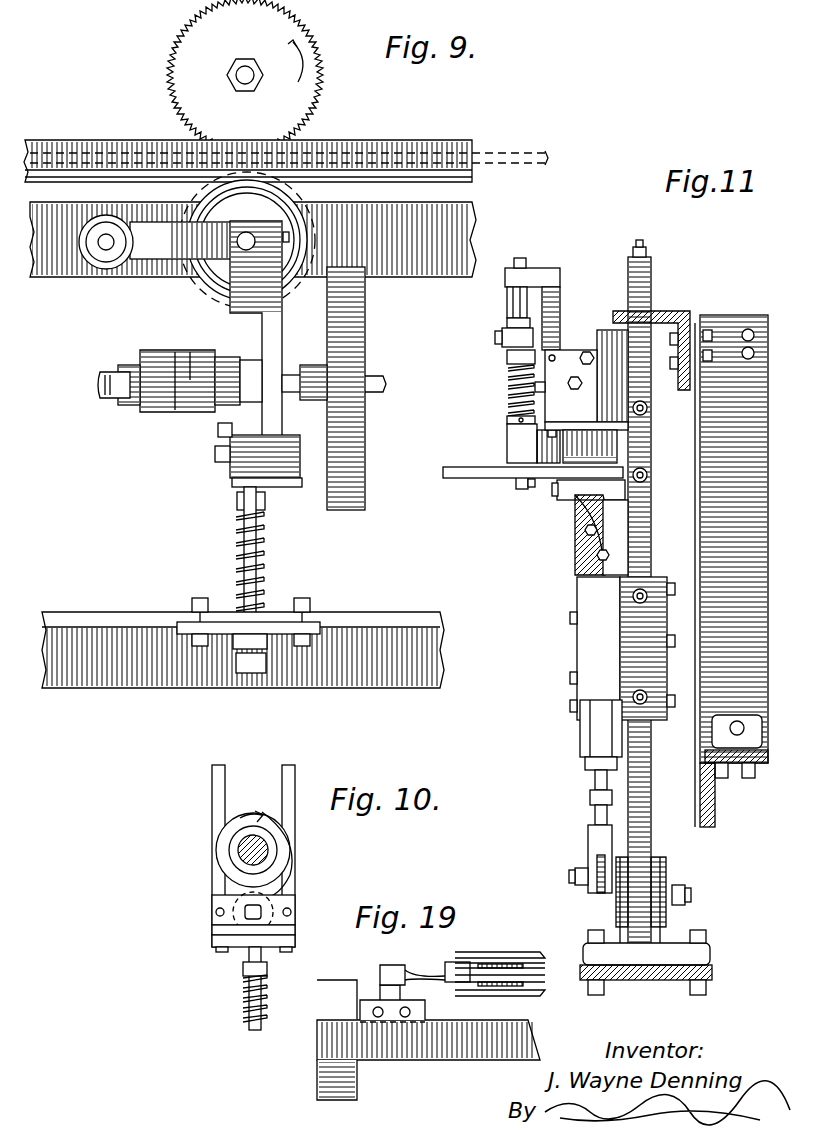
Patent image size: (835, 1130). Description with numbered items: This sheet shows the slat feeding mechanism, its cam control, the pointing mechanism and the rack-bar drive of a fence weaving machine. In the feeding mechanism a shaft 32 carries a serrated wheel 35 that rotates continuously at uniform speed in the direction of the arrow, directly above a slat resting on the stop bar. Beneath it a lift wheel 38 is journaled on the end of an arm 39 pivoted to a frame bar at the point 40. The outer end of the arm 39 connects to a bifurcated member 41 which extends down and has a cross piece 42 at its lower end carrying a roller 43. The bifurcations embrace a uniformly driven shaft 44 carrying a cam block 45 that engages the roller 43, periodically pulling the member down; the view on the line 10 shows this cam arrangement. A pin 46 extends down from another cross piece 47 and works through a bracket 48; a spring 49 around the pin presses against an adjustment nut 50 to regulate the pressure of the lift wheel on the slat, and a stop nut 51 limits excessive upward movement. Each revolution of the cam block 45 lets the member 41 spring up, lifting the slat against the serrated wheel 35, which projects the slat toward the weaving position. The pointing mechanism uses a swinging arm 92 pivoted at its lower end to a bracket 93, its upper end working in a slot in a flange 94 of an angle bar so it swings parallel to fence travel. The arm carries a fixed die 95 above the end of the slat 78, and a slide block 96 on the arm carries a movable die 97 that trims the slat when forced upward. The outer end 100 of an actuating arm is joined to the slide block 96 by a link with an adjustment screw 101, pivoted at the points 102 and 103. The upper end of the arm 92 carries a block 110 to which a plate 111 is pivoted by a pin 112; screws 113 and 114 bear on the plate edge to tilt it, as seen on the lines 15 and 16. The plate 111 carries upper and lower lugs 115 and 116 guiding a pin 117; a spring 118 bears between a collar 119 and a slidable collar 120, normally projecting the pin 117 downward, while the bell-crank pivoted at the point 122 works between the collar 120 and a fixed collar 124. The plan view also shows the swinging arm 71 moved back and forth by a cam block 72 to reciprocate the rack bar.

In FIG. 9, the section line 10— 10 is at (240, 338).
In FIG. 11, the section line 15— 15 is at (590, 240).
In FIG. 11, the section line 16— 16 is at (440, 493).
In FIG. 9, the shaft 32 is at (236, 78).
In FIG. 9, the serrated wheel 35 is at (245, 76).
In FIG. 9, the lift wheel 38 is at (262, 236).
In FIG. 9, the arm 39 is at (118, 258).
In FIG. 9, the pivot point 40 is at (98, 248).
In FIG. 9, the bifurcated member 41 is at (277, 342).
In FIG. 10, the bifurcated member 41 is at (285, 784).
In FIG. 10, the cross piece 42 is at (225, 902).
In FIG. 9, the roller 43 is at (222, 438).
In FIG. 10, the roller 43 is at (230, 930).
In FIG. 9, the shaft 44 is at (100, 386).
In FIG. 10, the shaft 44 is at (245, 850).
In FIG. 9, the cam block 45 is at (232, 356).
In FIG. 10, the cam block 45 is at (237, 818).
In FIG. 9, the pin 46 is at (262, 571).
In FIG. 10, the pin 46 is at (250, 1025).
In FIG. 9, the cross piece 47 is at (240, 482).
In FIG. 10, the cross piece 47 is at (225, 943).
In FIG. 9, the bracket 48 is at (215, 634).
In FIG. 9, the spring 49 is at (262, 540).
In FIG. 10, the spring 49 is at (243, 1003).
In FIG. 9, the adjustment nut 50 is at (266, 500).
In FIG. 10, the adjustment nut 50 is at (243, 970).
In FIG. 9, the stop nut 51 is at (255, 675).
In FIG. 19, the swinging arm 71 is at (455, 968).
In FIG. 19, the cam block 72 is at (537, 985).
In FIG. 9, the slat 78 is at (512, 152).
In FIG. 11, the slat 78 is at (468, 480).
In FIG. 11, the swinging arm 92 is at (646, 790).
In FIG. 11, the bracket 93 is at (668, 948).
In FIG. 11, the flange of angle bar 94 is at (683, 311).
In FIG. 11, the fixed die 95 is at (592, 441).
In FIG. 11, the slide block 96 is at (634, 637).
In FIG. 11, the movable die 97 is at (596, 553).
In FIG. 11, the outer end of arm 100 is at (590, 850).
In FIG. 11, the adjustment screw link 101 is at (588, 797).
In FIG. 11, the pivot point 102 is at (575, 876).
In FIG. 11, the pivot point 103 is at (588, 738).
In FIG. 11, the block 110 is at (563, 352).
In FIG. 11, the plate 111 is at (555, 305).
In FIG. 11, the pin 112 is at (546, 390).
In FIG. 11, the screw 113 is at (551, 360).
In FIG. 11, the screw 114 is at (520, 430).
In FIG. 11, the upper lug 115 is at (512, 277).
In FIG. 11, the lower lug 116 is at (520, 450).
In FIG. 11, the pin 117 is at (510, 300).
In FIG. 11, the spring 118 is at (508, 392).
In FIG. 11, the collar 119 is at (507, 419).
In FIG. 11, the collar or abutment 120 is at (507, 357).
In FIG. 11, the pivot point 122 is at (502, 338).
In FIG. 11, the collar 124 is at (507, 323).